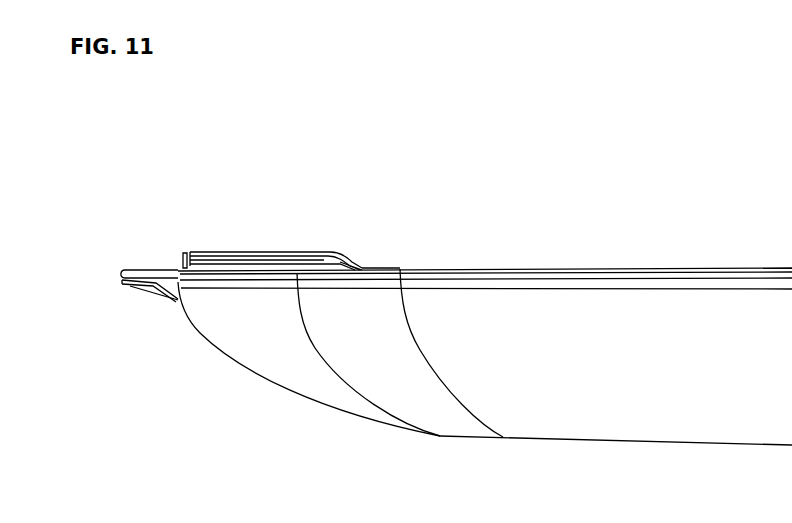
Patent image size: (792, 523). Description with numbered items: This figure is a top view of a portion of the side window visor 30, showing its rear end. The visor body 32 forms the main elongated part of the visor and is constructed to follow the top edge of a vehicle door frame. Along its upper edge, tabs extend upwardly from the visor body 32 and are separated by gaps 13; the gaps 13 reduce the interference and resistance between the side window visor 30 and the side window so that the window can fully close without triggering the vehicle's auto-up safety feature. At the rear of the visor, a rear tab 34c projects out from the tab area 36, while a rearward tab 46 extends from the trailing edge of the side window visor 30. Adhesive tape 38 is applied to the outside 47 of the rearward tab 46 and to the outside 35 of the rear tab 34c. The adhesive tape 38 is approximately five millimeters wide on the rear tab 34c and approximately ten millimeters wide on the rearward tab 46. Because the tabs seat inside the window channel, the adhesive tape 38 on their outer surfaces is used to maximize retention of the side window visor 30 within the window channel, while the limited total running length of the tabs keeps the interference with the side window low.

The gaps 13 is at (352, 244).
The side window visor 30 is at (719, 157).
The visor body 32 is at (611, 362).
The rear tab 34c is at (204, 252).
The outside of the rear tab 35 is at (185, 258).
The tab area 36 is at (392, 268).
The adhesive tape 38 is at (168, 296).
The rearward tab 46 is at (118, 266).
The outside of the rearward tab 47 is at (172, 284).